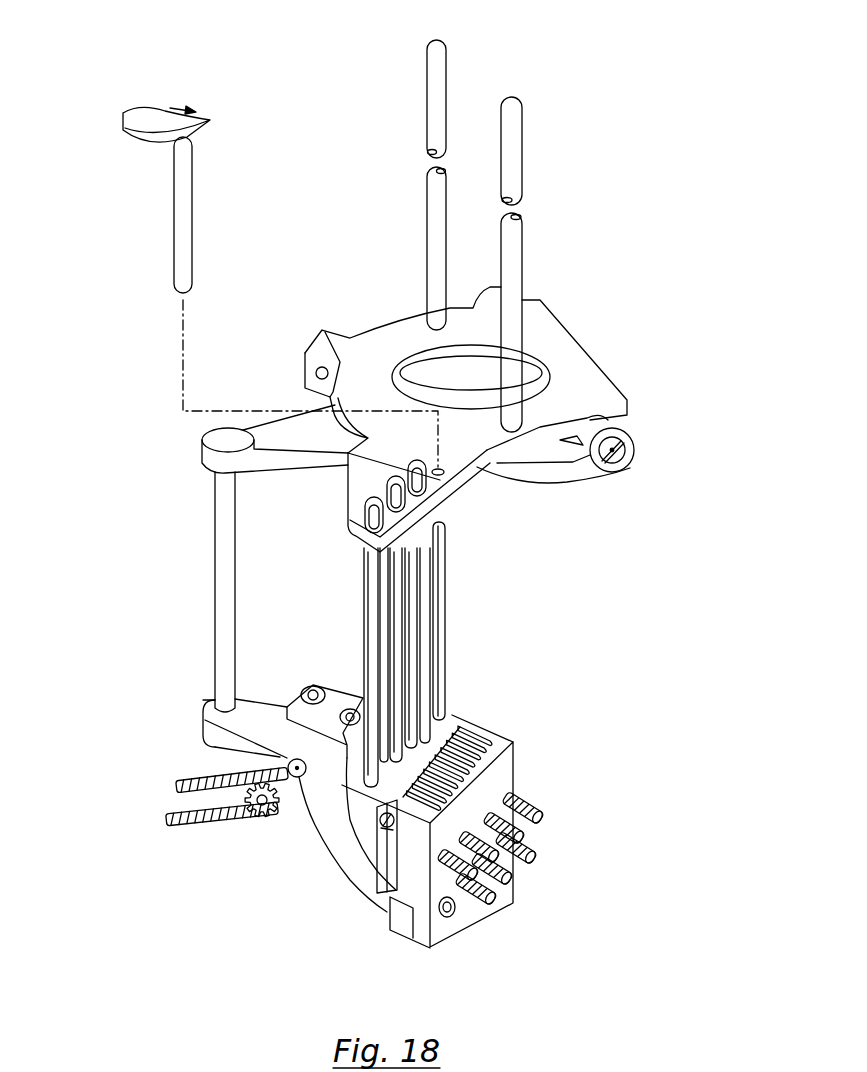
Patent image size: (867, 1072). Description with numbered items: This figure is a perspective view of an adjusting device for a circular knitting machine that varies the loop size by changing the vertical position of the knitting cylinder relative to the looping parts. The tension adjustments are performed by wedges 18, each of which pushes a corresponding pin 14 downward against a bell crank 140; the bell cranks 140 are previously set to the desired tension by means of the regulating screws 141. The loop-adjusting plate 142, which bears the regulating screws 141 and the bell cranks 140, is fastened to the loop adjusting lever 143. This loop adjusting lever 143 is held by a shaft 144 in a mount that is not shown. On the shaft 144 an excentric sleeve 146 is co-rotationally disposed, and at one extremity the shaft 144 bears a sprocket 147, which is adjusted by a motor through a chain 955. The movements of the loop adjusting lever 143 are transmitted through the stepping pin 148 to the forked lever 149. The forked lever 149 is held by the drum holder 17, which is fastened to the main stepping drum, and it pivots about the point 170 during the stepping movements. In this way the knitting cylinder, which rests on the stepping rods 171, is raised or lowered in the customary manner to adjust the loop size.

The wedge 18 is at (152, 130).
The stepping rods 171 is at (441, 72).
The drum holder 17 is at (583, 372).
The pivot point 170 is at (634, 450).
The forked lever 149 is at (527, 473).
The stepping pin 148 is at (223, 541).
The pins 14 is at (398, 675).
The excentric sleeve 146 is at (203, 718).
The sprocket 147 is at (183, 783).
The chain 955 is at (167, 818).
The shaft 144 is at (237, 817).
The loop adjusting lever 143 is at (315, 818).
The bell cranks 140 is at (388, 852).
The loop-adjusting plate 142 is at (503, 760).
The regulating screws 141 is at (538, 855).